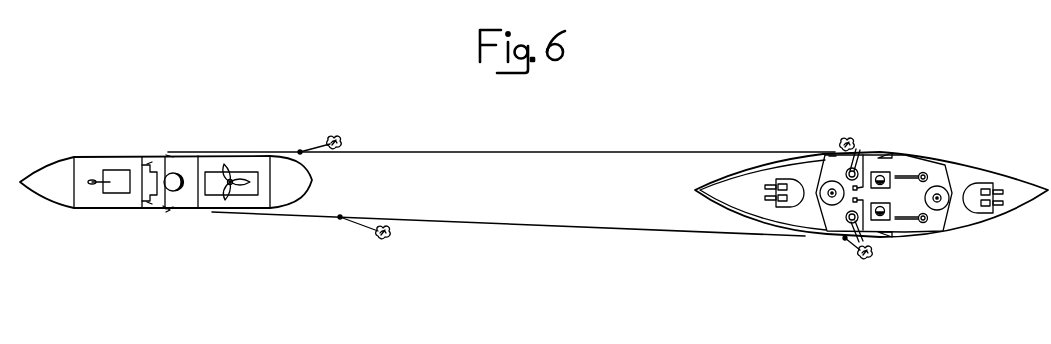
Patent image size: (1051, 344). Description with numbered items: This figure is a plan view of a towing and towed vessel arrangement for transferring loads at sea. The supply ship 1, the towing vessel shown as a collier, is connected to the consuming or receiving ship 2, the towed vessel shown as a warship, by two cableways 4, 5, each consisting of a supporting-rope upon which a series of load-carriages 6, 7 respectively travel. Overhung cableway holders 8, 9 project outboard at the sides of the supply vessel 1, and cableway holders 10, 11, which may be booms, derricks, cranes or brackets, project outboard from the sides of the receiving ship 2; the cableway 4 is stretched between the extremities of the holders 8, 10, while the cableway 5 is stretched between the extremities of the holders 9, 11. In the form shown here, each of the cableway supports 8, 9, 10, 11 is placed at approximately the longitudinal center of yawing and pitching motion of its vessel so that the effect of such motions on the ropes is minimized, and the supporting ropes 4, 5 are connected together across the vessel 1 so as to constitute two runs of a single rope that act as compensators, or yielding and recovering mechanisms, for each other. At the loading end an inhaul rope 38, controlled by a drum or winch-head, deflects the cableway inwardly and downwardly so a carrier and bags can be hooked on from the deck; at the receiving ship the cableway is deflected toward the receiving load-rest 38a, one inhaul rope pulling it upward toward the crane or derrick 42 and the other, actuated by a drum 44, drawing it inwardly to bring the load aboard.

The supply ship 1 is at (53, 172).
The consuming or receiving ship 2 is at (997, 182).
The cableway 4 is at (550, 152).
The cableway 5 is at (562, 227).
The load-carriage 6 is at (320, 145).
The load-carriage 7 is at (341, 219).
The overhung cableway holder 8 is at (167, 209).
The overhung cableway holder 9 is at (170, 156).
The cableway holder 10 is at (888, 237).
The cableway holder 11 is at (892, 153).
The inhaul rope 38 is at (230, 178).
The receiving load-rest 38a is at (833, 156).
The crane or derrick 42 is at (860, 148).
The drum 44 is at (839, 174).